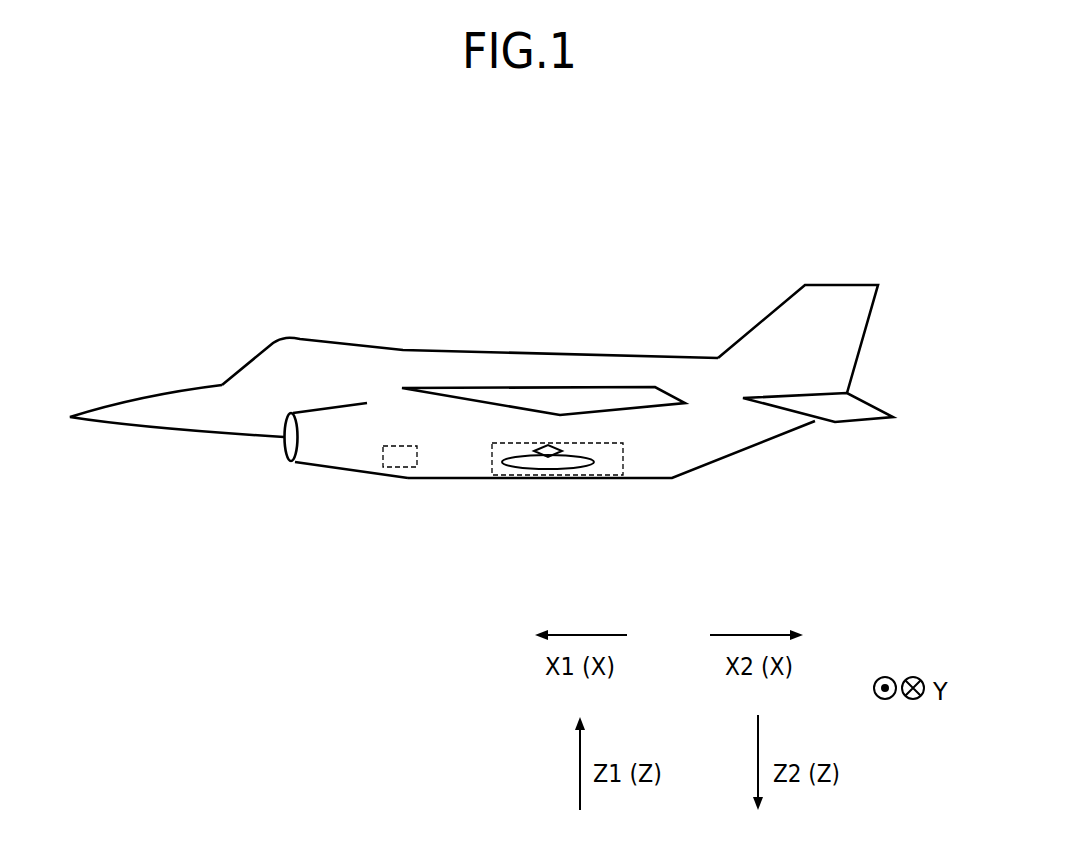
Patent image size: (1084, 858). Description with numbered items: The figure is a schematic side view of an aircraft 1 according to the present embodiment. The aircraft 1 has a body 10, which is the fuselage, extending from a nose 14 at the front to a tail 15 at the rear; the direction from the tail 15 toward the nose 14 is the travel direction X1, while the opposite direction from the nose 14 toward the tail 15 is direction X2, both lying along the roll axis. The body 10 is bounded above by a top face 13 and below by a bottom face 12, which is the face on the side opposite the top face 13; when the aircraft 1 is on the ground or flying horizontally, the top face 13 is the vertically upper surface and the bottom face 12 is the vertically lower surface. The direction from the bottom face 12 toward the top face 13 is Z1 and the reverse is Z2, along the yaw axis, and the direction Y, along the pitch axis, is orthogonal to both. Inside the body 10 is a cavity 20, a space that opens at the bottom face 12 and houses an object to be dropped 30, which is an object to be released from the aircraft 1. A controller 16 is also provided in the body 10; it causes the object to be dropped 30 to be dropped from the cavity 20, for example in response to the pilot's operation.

The aircraft 1 is at (881, 206).
The body 10 is at (609, 362).
The bottom face 12 is at (448, 478).
The top face 13 is at (500, 348).
The nose 14 is at (62, 422).
The tail 15 is at (847, 393).
The controller 16 is at (397, 468).
The cavity 20 is at (612, 470).
The object to be dropped 30 is at (557, 468).